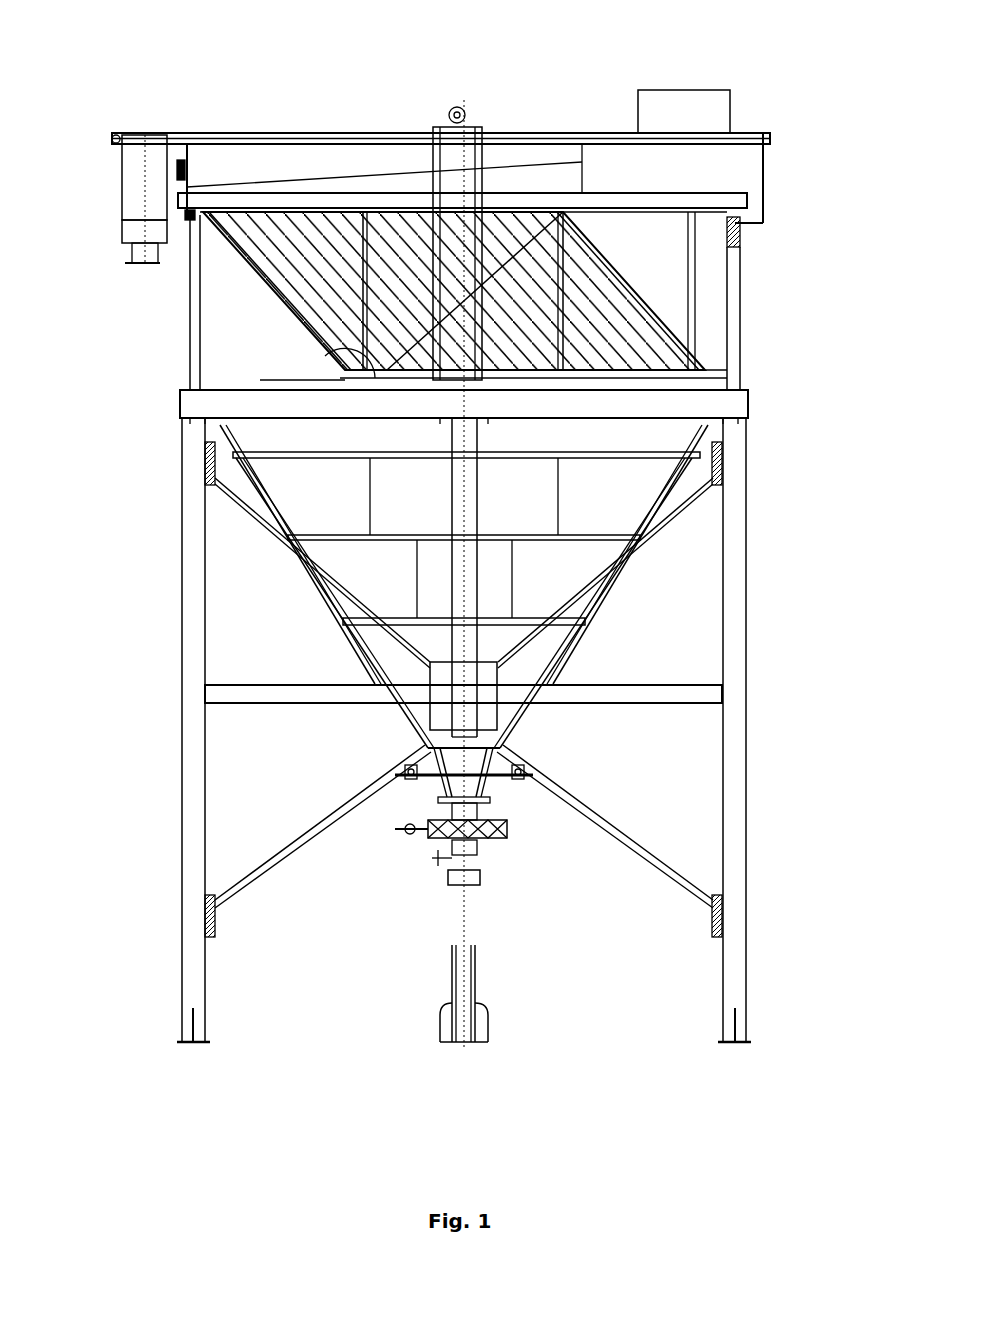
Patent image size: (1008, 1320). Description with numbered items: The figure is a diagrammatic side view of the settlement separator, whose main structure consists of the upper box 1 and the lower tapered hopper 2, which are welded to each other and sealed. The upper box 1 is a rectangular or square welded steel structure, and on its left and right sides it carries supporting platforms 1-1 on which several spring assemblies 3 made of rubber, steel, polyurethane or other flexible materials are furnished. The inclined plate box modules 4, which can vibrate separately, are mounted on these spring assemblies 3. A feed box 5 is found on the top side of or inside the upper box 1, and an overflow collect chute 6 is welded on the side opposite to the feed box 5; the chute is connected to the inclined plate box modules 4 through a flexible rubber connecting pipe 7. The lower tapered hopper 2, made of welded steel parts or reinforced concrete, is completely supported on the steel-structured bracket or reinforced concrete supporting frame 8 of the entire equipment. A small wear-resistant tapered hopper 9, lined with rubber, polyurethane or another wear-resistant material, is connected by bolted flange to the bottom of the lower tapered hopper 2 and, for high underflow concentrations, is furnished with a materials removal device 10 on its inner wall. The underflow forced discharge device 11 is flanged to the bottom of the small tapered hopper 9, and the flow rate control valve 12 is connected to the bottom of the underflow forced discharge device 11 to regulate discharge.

The upper box 1 is at (230, 337).
The supporting platforms 1-1 is at (190, 222).
The lower tapered hopper 2 is at (312, 485).
The spring assemblies 3 is at (188, 216).
The inclined plate box modules 4 is at (327, 247).
The feed box 5 is at (684, 114).
The overflow collect chute 6 is at (135, 173).
The rubber connecting pipe 7 is at (180, 163).
The supporting frame of the entire equipment 8 is at (733, 478).
The small wear-resistant tapered hopper 9 is at (490, 743).
The materials removal device on the inner wall of the tapered hopper 10 is at (522, 772).
The underflow forced discharge device 11 is at (507, 828).
The flow rate control valve 12 is at (482, 860).